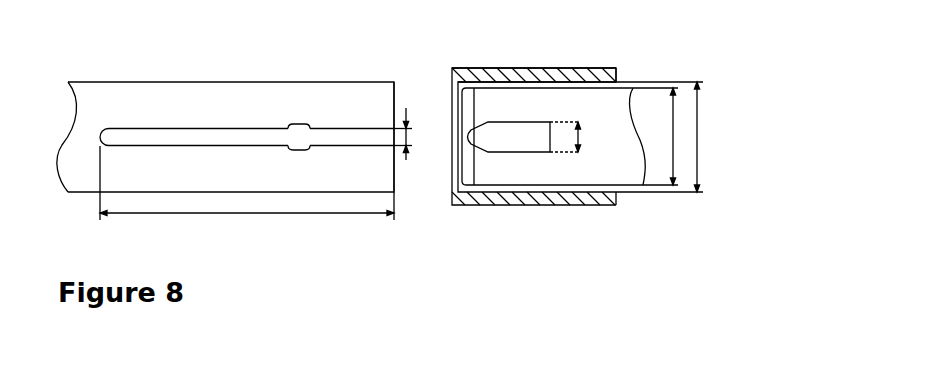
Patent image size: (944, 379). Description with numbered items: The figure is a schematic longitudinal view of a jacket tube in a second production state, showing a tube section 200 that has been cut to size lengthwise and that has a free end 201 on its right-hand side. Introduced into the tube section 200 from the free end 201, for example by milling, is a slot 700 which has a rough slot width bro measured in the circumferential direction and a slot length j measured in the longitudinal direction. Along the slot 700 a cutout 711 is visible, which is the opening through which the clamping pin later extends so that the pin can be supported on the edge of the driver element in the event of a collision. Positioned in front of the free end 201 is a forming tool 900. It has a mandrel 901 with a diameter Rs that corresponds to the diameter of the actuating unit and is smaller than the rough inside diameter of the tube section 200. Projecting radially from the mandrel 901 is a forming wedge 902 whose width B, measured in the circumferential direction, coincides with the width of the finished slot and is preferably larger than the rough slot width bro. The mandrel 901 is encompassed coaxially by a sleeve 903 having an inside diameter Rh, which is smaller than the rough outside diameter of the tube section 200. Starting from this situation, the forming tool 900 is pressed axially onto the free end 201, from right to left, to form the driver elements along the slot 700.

The tube section 200 is at (175, 98).
The free end 201 is at (396, 91).
The slot 700 is at (320, 138).
The cutout 711 is at (300, 125).
The forming tool 900 is at (578, 216).
The mandrel 901 is at (600, 110).
The forming wedge 902 is at (514, 135).
The sleeve 903 is at (520, 72).
The slot length j is at (222, 213).
The rough slot width bro is at (408, 137).
The width of the forming wedge B is at (578, 137).
The diameter of the mandrel Rs is at (672, 137).
The inside diameter of the sleeve Rh is at (700, 128).